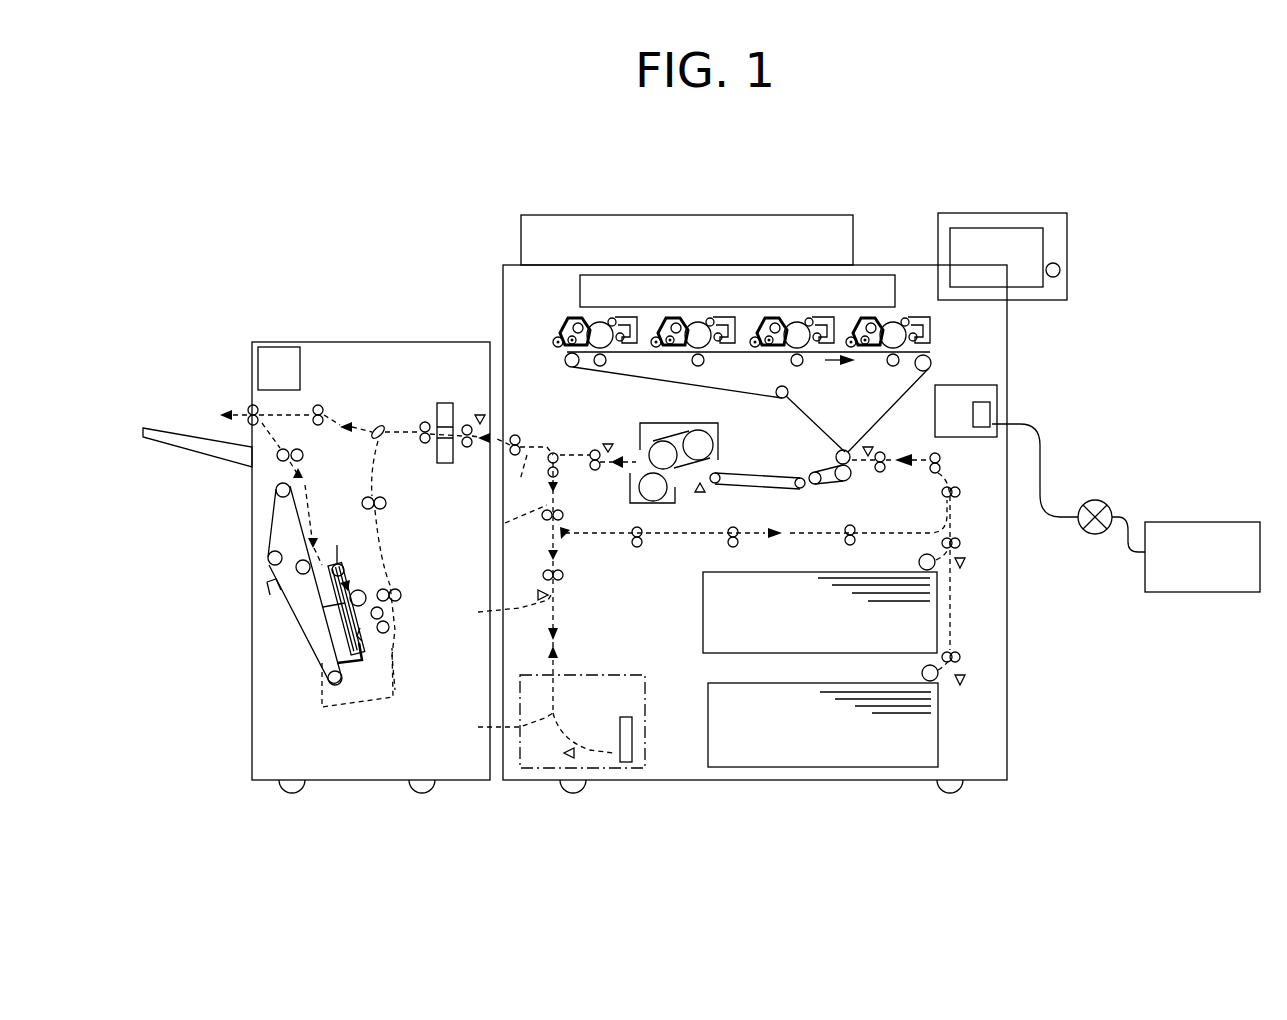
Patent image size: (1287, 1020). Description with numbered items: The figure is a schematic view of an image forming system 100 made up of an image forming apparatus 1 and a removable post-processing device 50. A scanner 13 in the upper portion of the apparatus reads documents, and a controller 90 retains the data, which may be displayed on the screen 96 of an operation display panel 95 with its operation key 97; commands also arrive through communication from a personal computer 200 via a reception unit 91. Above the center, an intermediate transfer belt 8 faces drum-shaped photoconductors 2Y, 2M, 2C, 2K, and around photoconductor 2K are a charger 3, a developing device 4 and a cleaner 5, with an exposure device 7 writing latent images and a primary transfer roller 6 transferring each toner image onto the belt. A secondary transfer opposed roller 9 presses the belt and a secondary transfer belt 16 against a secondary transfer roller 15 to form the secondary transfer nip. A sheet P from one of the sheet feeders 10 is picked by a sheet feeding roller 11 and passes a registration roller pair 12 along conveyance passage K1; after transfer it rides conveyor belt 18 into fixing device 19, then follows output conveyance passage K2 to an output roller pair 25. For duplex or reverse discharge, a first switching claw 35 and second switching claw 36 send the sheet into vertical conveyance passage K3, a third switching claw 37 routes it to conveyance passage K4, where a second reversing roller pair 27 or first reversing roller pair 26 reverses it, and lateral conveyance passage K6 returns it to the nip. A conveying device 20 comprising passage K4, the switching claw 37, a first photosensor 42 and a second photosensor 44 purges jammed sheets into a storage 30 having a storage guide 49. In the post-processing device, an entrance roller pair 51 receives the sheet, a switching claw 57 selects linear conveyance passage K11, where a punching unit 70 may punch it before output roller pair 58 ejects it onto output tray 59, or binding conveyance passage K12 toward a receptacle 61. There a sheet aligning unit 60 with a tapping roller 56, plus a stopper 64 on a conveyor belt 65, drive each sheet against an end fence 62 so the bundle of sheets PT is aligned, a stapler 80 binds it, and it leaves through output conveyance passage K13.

The image forming apparatus 1 is at (884, 190).
The image forming system 100 is at (675, 190).
The scanner 13 is at (745, 220).
The exposure device 7 is at (715, 287).
The photoconductor 2Y is at (603, 328).
The photoconductor 2M is at (698, 330).
The photoconductor 2C is at (797, 330).
The photoconductor 2K is at (898, 315).
The charger 3 is at (902, 325).
The developing device 4 is at (862, 328).
The cleaner 5 is at (931, 338).
The primary transfer roller 6 is at (600, 366).
The intermediate transfer belt 8 is at (776, 392).
The secondary transfer opposed roller 9 is at (843, 450).
The secondary transfer roller 15 is at (843, 482).
The secondary transfer belt 16 is at (812, 476).
The conveyor belt 18 is at (757, 490).
The fixing device 19 is at (649, 415).
The output roller pair 25 is at (514, 435).
The first switching claw 35 is at (557, 454).
The second switching claw 36 is at (559, 473).
The first reversing roller pair 26 is at (563, 514).
The third switching claw 37 is at (572, 531).
The second reversing roller pair 27 is at (562, 578).
The first photosensor 42 is at (536, 590).
The conveying device 20 is at (515, 635).
The storage 30 is at (608, 672).
The second photosensor 44 is at (565, 765).
The storage guide 49 is at (501, 727).
The sheet feeder 10 is at (703, 627).
The sheet feeding roller 11 is at (919, 562).
The registration roller pair 12 is at (882, 473).
The sheet P is at (905, 602).
The conveyance passage K1 is at (957, 512).
The output conveyance passage K2 is at (505, 467).
The vertical conveyance passage K3 is at (500, 523).
The conveyance passage K4 is at (501, 609).
The lateral conveyance passage K6 is at (696, 545).
The controller 90 is at (985, 385).
The reception unit 91 is at (992, 412).
The operation display panel 95 is at (1040, 205).
The screen 96 is at (1000, 237).
The operation key 97 is at (1061, 269).
The personal computer 200 is at (1202, 528).
The post-processing device 50 is at (370, 315).
The output tray 59 is at (185, 445).
The output roller pair 58 is at (249, 405).
The linear conveyance passage K11 is at (372, 403).
The switching claw 57 is at (379, 425).
The punching unit 70 is at (445, 463).
The entrance roller pair 51 is at (468, 448).
The output conveyance passage K13 is at (310, 483).
The conveyor belt 65 is at (275, 505).
The stopper 64 is at (266, 586).
The receptacle 61 is at (323, 607).
The bundle of sheets PT is at (335, 648).
The end fence 62 is at (356, 665).
The sheet aligning unit 60 is at (378, 658).
The tapping roller 56 is at (345, 568).
The binding conveyance passage K12 is at (388, 525).
The stapler 80 is at (320, 708).